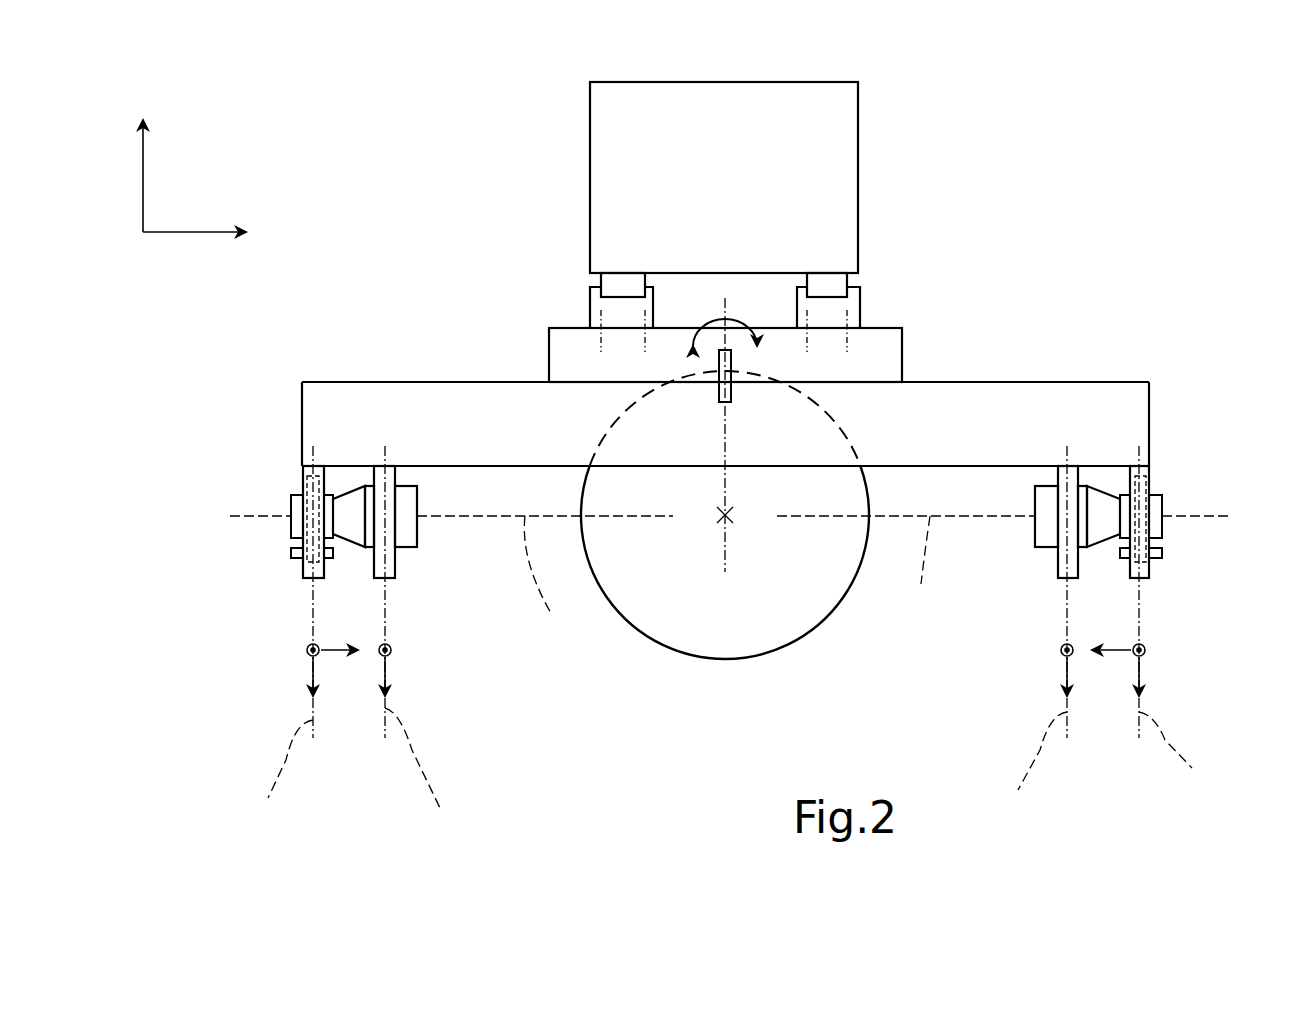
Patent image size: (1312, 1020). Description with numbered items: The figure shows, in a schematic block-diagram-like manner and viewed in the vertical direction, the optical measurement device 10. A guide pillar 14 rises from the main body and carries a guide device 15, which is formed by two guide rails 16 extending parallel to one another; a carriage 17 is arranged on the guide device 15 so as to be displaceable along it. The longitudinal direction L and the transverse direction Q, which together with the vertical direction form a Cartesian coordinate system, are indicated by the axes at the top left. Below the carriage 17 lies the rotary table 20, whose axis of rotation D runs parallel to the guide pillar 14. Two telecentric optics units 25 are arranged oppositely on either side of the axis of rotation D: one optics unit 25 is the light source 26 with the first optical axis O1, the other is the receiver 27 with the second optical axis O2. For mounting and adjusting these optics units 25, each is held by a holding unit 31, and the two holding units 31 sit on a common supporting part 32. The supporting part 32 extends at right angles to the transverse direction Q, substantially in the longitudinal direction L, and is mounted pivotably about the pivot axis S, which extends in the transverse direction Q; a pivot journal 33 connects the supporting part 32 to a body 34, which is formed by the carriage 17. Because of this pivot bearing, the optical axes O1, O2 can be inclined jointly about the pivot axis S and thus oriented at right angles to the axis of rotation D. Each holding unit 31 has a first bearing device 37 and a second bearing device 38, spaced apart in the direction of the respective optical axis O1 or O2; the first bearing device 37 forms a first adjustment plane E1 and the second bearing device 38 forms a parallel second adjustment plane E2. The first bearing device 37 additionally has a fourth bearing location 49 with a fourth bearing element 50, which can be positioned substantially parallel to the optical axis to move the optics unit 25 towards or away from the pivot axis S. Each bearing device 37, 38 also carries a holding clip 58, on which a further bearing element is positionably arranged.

The optical measurement device 10 is at (1132, 210).
The guide pillar 14 is at (852, 160).
The guide device 15 is at (725, 260).
The guide rail 16 is at (812, 212).
The carriage 17 is at (786, 310).
The body 34 is at (883, 337).
The rotary table 20 is at (810, 632).
The optics unit 25 is at (424, 575).
The light source 26 is at (422, 562).
The receiver 27 is at (1033, 567).
The holding unit 31 is at (344, 436).
The supporting part 32 is at (1077, 390).
The pivot journal 33 is at (718, 390).
The first bearing device 37 is at (298, 568).
The second bearing device 38 is at (390, 466).
The fourth bearing location 49 is at (298, 566).
The fourth bearing element 50 is at (297, 558).
The holding clip 58 is at (392, 500).
The transverse direction Q is at (143, 180).
The longitudinal direction L is at (188, 232).
The axis of rotation D is at (722, 512).
The pivot axis S is at (728, 538).
The first optical axis O1 is at (548, 578).
The second optical axis O2 is at (927, 563).
The first adjustment plane E1 is at (734, 770).
The second adjustment plane E2 is at (726, 773).